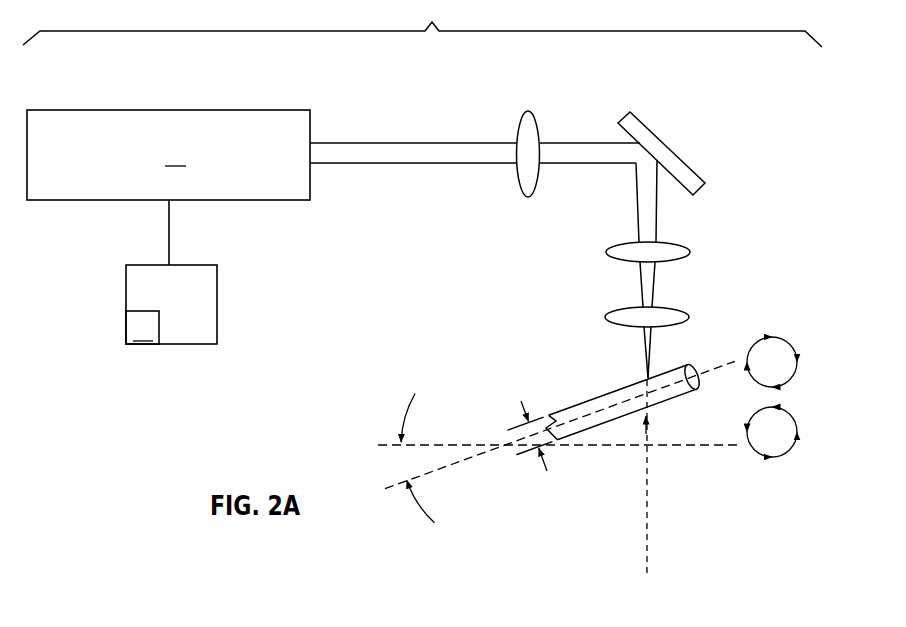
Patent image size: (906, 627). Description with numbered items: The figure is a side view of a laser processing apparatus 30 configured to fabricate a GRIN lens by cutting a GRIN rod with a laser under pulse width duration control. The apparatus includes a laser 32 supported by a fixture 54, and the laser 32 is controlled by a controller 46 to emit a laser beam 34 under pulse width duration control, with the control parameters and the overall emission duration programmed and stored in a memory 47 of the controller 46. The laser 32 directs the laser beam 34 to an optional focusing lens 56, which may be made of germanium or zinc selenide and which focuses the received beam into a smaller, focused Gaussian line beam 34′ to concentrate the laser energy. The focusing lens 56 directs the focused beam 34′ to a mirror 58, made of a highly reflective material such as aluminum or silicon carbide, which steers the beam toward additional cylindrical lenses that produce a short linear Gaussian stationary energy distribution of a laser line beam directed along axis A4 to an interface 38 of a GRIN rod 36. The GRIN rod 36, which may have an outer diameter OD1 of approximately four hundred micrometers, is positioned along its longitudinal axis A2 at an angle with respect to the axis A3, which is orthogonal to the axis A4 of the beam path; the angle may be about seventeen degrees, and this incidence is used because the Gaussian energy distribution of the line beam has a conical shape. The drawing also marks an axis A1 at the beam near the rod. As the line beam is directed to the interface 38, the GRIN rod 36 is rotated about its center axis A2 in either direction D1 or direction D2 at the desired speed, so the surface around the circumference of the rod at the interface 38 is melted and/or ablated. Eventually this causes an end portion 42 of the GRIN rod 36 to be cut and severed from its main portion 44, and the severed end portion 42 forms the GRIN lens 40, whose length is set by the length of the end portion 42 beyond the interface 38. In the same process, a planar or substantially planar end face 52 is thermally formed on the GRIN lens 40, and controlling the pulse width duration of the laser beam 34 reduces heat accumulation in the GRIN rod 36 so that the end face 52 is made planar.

The laser processing apparatus 30 is at (422, 23).
The laser 32 is at (168, 155).
The fixture 54 is at (143, 110).
The laser beam 34 is at (394, 141).
The focusing lens 56 is at (530, 112).
The focused laser line beam 34′ is at (586, 138).
The mirror 58 is at (656, 135).
The controller 46 is at (207, 265).
The memory 47 is at (142, 327).
The interface 38 is at (656, 363).
The main portion 44 is at (591, 398).
The end portion 42 is at (672, 397).
The GRIN rod 36 is at (629, 461).
The end face 52 is at (635, 486).
The GRIN lens 40 is at (704, 400).
The beam axis A1 is at (645, 416).
The longitudinal axis A2 is at (552, 438).
The reference axis A3 is at (545, 443).
The laser line beam path axis A4 is at (666, 484).
The outer diameter OD1 is at (518, 446).
The first rotation direction D1 is at (781, 350).
The second rotation direction D2 is at (783, 423).